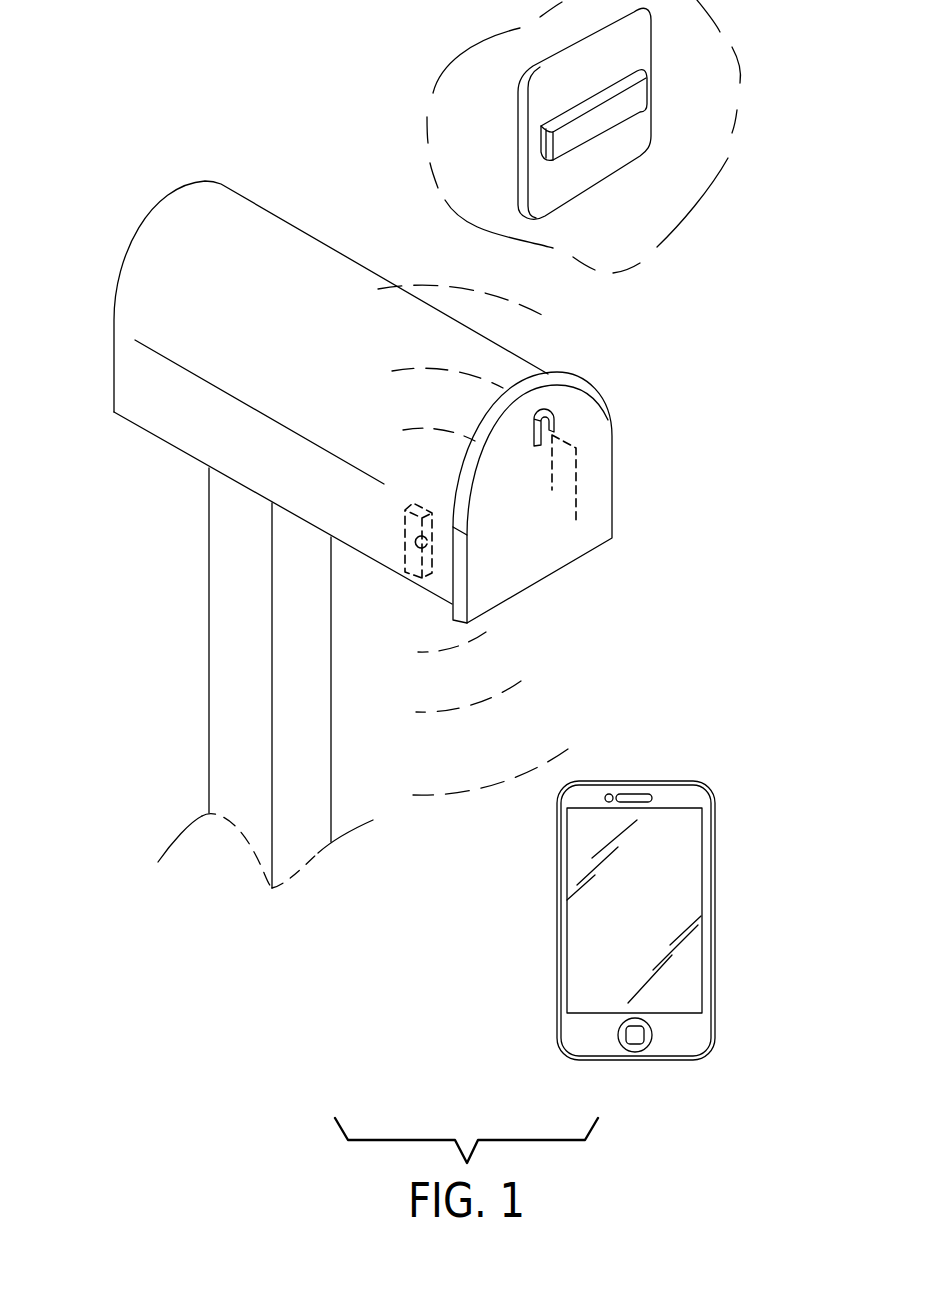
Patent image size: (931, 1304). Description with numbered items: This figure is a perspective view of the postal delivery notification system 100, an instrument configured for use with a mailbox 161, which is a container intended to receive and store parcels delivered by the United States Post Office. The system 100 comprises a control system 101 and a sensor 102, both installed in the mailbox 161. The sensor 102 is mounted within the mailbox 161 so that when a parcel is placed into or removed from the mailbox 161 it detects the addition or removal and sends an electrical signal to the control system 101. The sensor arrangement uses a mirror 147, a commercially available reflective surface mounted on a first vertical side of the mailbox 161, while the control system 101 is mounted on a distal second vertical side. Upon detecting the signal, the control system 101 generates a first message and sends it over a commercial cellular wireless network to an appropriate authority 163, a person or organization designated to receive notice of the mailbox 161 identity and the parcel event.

The postal delivery notification system 100 is at (121, 136).
The mailbox 161 is at (246, 219).
The mirror 147 is at (579, 448).
The control system 101 is at (408, 575).
The sensor 102 is at (428, 546).
The appropriate authority 163 is at (645, 123).